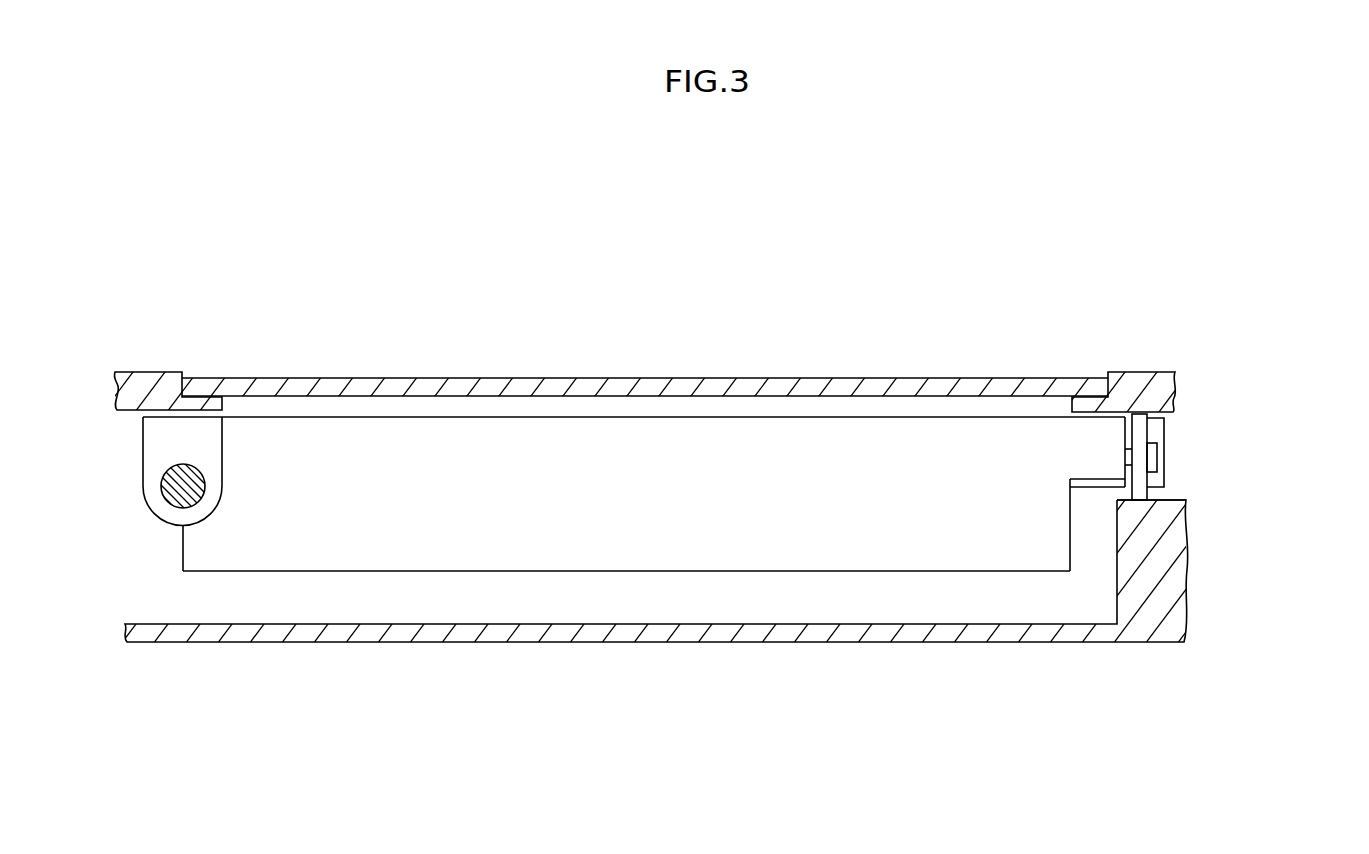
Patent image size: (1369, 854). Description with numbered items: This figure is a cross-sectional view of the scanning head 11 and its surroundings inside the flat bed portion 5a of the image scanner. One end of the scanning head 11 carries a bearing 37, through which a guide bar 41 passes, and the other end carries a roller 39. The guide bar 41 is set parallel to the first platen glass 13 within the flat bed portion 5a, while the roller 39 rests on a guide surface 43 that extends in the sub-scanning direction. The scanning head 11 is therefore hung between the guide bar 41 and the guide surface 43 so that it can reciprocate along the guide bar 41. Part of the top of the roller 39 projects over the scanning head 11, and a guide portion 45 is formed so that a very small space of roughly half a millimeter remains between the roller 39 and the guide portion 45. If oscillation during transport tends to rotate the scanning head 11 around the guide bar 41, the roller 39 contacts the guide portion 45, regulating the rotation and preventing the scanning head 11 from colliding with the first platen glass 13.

The flat bed portion 5a is at (1157, 630).
The scanning head 11 is at (499, 548).
The first platen glass 13 is at (712, 388).
The bearing 37 is at (163, 512).
The roller 39 is at (1140, 433).
The guide bar 41 is at (168, 473).
The guide surface 43 is at (1185, 500).
The guide portion 45 is at (1173, 404).